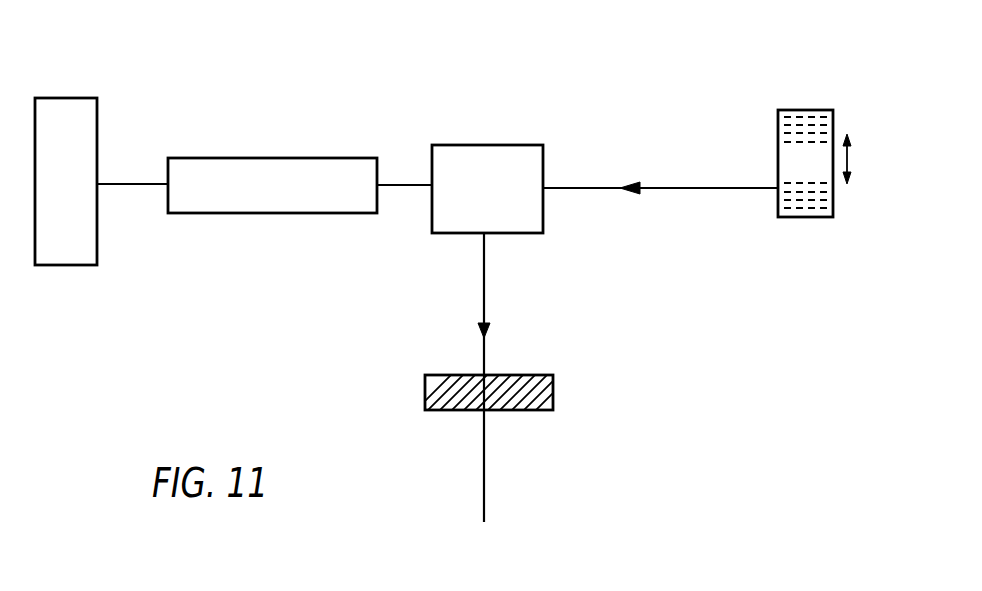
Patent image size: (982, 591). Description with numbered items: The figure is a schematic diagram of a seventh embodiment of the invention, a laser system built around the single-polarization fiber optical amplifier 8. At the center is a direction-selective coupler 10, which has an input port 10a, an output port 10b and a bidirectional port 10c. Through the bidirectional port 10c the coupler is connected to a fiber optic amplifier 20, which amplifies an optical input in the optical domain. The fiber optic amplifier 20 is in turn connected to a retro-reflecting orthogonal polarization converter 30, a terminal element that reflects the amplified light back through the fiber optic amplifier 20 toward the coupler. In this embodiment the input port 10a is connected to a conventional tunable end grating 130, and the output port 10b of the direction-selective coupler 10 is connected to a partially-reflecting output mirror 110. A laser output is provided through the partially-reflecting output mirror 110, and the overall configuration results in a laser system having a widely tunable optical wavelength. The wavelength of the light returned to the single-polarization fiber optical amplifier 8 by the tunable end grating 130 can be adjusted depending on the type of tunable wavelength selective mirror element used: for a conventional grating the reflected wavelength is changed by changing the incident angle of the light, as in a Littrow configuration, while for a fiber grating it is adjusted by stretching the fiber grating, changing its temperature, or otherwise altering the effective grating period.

The single-polarization fiber optical amplifier 8 is at (283, 250).
The direction-selective coupler 10 is at (502, 203).
The input port 10a is at (545, 187).
The output port 10b is at (486, 235).
The bidirectional port 10c is at (430, 179).
The fiber optic amplifier 20 is at (288, 195).
The retro-reflecting orthogonal polarization converter 30 is at (78, 195).
The partially-reflecting output mirror 110 is at (556, 392).
The tunable end grating 130 is at (850, 64).